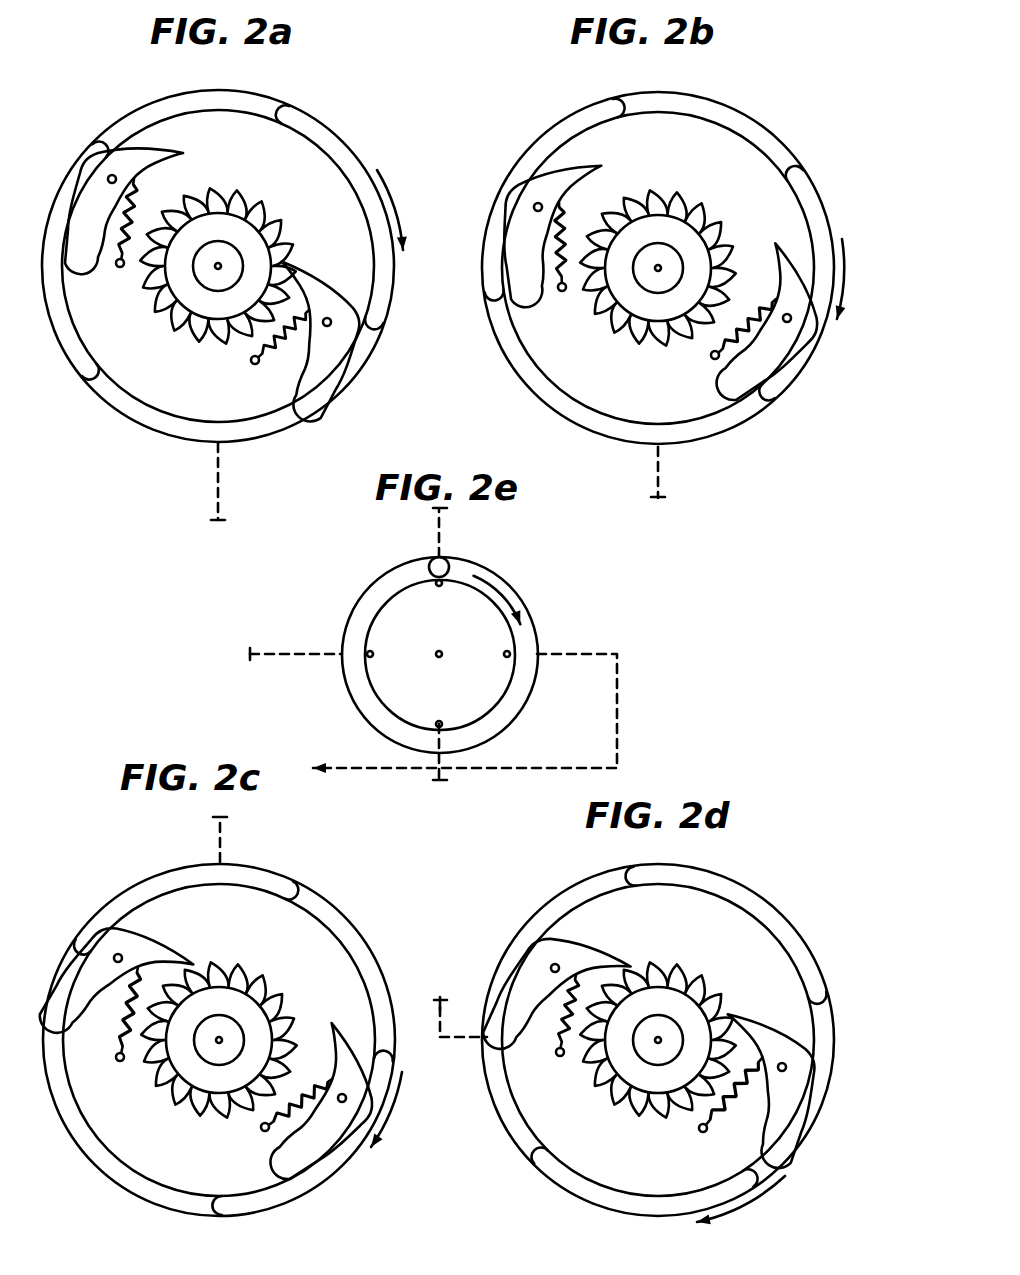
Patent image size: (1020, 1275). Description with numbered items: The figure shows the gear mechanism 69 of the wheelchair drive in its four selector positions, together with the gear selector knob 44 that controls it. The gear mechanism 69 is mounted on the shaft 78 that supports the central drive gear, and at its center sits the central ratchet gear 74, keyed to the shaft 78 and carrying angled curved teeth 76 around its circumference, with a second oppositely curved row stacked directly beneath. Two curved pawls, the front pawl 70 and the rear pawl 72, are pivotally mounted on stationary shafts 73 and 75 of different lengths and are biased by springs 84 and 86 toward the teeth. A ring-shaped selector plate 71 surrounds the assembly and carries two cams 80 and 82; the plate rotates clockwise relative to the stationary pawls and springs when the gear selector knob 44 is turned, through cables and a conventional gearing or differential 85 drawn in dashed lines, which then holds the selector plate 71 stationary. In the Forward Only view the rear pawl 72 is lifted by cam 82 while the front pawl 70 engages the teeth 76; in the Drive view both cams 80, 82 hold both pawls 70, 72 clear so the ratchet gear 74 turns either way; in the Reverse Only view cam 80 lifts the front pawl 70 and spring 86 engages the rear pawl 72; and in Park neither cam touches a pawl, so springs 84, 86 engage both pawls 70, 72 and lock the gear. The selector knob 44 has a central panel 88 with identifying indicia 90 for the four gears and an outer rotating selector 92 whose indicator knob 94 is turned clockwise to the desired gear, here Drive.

In FIG. 2E, the gear selector knob 44 is at (338, 702).
In FIG. 2A, the gear mechanism 69 is at (67, 163).
In FIG. 2B, the gear mechanism 69 is at (782, 118).
In FIG. 2C, the gear mechanism 69 is at (77, 887).
In FIG. 2D, the gear mechanism 69 is at (806, 910).
In FIG. 2A, the front pawl 70 is at (311, 402).
In FIG. 2B, the front pawl 70 is at (749, 392).
In FIG. 2C, the front pawl 70 is at (322, 1138).
In FIG. 2D, the front pawl 70 is at (788, 1140).
In FIG. 2A, the selector plate 71 is at (112, 398).
In FIG. 2B, the selector plate 71 is at (672, 450).
In FIG. 2C, the selector plate 71 is at (127, 1182).
In FIG. 2D, the selector plate 71 is at (513, 1125).
In FIG. 2A, the rear pawl 72 is at (112, 167).
In FIG. 2B, the rear pawl 72 is at (549, 184).
In FIG. 2C, the rear pawl 72 is at (70, 1003).
In FIG. 2D, the rear pawl 72 is at (530, 975).
In FIG. 2A, the stationary shaft 73 is at (331, 325).
In FIG. 2B, the stationary shaft 73 is at (790, 322).
In FIG. 2C, the stationary shaft 73 is at (343, 1094).
In FIG. 2D, the stationary shaft 73 is at (783, 1063).
In FIG. 2A, the central ratchet gear 74 is at (192, 235).
In FIG. 2B, the central ratchet gear 74 is at (657, 225).
In FIG. 2C, the central ratchet gear 74 is at (215, 990).
In FIG. 2D, the central ratchet gear 74 is at (682, 1000).
In FIG. 2A, the stationary shaft 75 is at (106, 181).
In FIG. 2B, the stationary shaft 75 is at (534, 207).
In FIG. 2C, the stationary shaft 75 is at (121, 956).
In FIG. 2D, the stationary shaft 75 is at (559, 966).
In FIG. 2A, the curved teeth 76 is at (278, 210).
In FIG. 2B, the curved teeth 76 is at (730, 225).
In FIG. 2C, the curved teeth 76 is at (195, 1130).
In FIG. 2D, the curved teeth 76 is at (630, 1130).
In FIG. 2A, the shaft 78 is at (210, 283).
In FIG. 2B, the shaft 78 is at (650, 282).
In FIG. 2C, the shaft 78 is at (235, 1030).
In FIG. 2D, the shaft 78 is at (657, 1020).
In FIG. 2A, the cam 80 is at (343, 140).
In FIG. 2B, the cam 80 is at (810, 185).
In FIG. 2C, the cam 80 is at (297, 1192).
In FIG. 2D, the cam 80 is at (548, 1168).
In FIG. 2A, the cam 82 is at (57, 333).
In FIG. 2B, the cam 82 is at (588, 108).
In FIG. 2C, the cam 82 is at (148, 878).
In FIG. 2D, the cam 82 is at (718, 874).
In FIG. 2A, the spring 84 is at (281, 335).
In FIG. 2B, the spring 84 is at (712, 358).
In FIG. 2C, the spring 84 is at (262, 1131).
In FIG. 2D, the spring 84 is at (706, 1133).
In FIG. 2A, the gearing or differential 85 is at (216, 500).
In FIG. 2B, the gearing or differential 85 is at (654, 496).
In FIG. 2E, the gearing or differential 85 is at (430, 778).
In FIG. 2C, the gearing or differential 85 is at (214, 823).
In FIG. 2D, the gearing or differential 85 is at (445, 1000).
In FIG. 2A, the spring 86 is at (117, 268).
In FIG. 2B, the spring 86 is at (561, 292).
In FIG. 2C, the spring 86 is at (119, 1062).
In FIG. 2D, the spring 86 is at (559, 1057).
In FIG. 2E, the central panel 88 is at (469, 639).
In FIG. 2E, the identifying indicia 90 is at (420, 708).
In FIG. 2E, the outer rotating selector 92 is at (532, 683).
In FIG. 2E, the indicator knob 94 is at (449, 563).